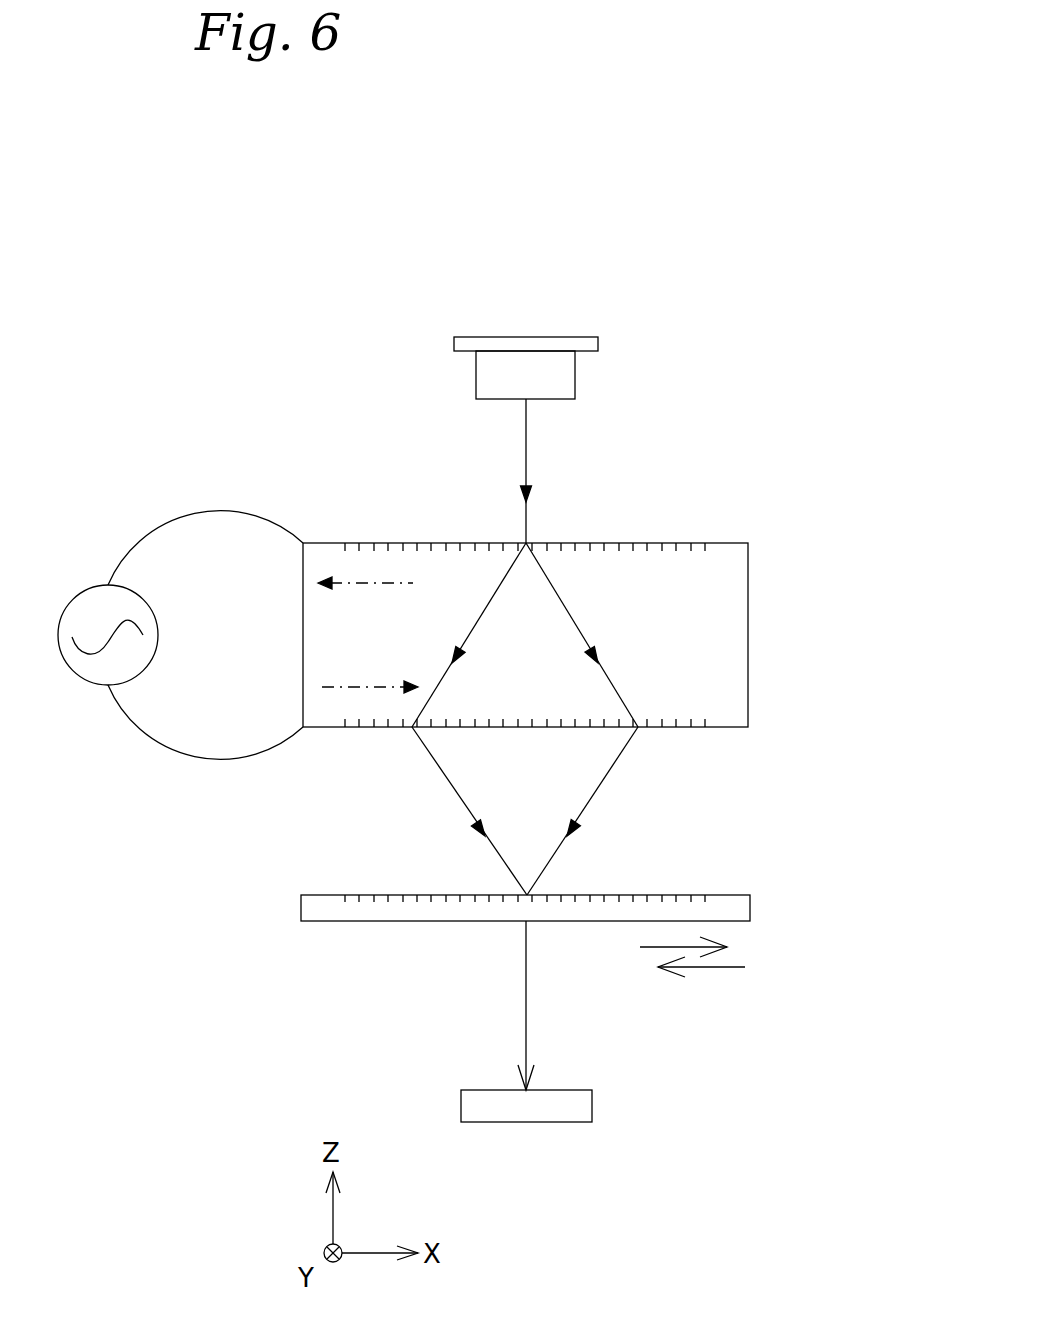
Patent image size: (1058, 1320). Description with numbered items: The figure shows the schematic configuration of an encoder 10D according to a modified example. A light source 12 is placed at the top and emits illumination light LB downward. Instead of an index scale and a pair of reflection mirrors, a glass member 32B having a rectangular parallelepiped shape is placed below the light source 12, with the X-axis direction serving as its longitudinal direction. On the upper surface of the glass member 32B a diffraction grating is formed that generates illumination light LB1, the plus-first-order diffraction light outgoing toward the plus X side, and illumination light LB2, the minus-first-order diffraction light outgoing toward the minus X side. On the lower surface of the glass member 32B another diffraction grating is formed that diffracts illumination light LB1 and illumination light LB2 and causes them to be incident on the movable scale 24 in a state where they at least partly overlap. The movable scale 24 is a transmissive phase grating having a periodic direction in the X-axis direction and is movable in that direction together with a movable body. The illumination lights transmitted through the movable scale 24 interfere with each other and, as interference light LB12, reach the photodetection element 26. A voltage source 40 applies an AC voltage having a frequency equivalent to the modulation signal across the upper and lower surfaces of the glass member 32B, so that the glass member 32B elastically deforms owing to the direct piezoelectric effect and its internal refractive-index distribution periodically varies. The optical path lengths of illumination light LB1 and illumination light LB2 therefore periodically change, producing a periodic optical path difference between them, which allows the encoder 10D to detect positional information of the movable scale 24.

The encoder 10D is at (848, 128).
The light source 12 is at (526, 332).
The illumination light LB is at (570, 471).
The glass member 32B is at (581, 634).
The voltage source 40 is at (175, 635).
The illumination light LB2 is at (428, 719).
The illumination light LB1 is at (621, 719).
The movable scale 24 is at (572, 922).
The interference light LB12 is at (589, 1005).
The photodetection element 26 is at (576, 1097).